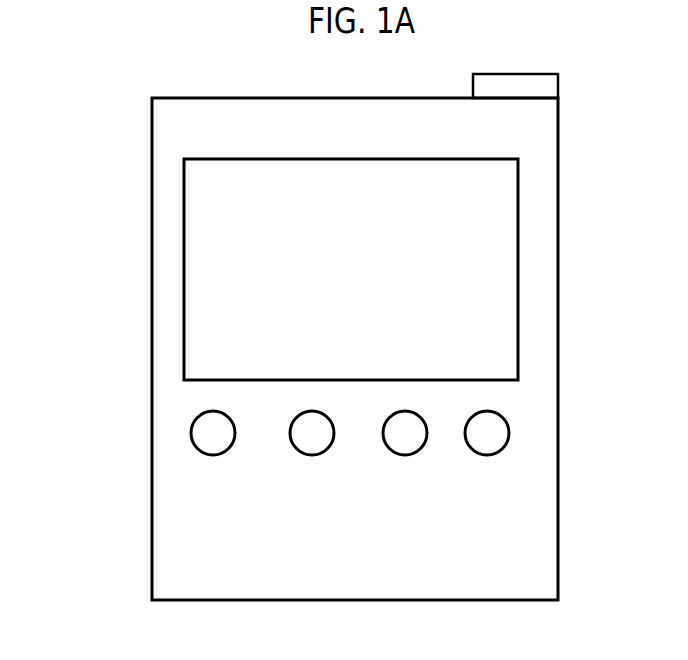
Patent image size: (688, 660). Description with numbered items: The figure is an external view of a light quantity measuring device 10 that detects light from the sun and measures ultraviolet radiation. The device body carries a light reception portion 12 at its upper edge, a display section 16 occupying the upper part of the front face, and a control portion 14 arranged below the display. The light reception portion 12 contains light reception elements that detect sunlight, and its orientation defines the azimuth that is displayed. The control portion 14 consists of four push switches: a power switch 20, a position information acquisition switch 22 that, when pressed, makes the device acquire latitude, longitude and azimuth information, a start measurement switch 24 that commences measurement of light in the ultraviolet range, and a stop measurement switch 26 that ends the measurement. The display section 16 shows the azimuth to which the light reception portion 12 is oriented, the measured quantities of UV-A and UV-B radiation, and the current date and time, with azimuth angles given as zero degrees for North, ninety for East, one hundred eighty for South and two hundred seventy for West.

The light quantity measuring device 10 is at (105, 290).
The light reception portion 12 is at (558, 85).
The control portion 14 is at (366, 473).
The display section 16 is at (518, 237).
The power switch 20 is at (257, 408).
The position information acquisition switch 22 is at (356, 408).
The start measurement switch 24 is at (449, 408).
The stop measurement switch 26 is at (501, 447).